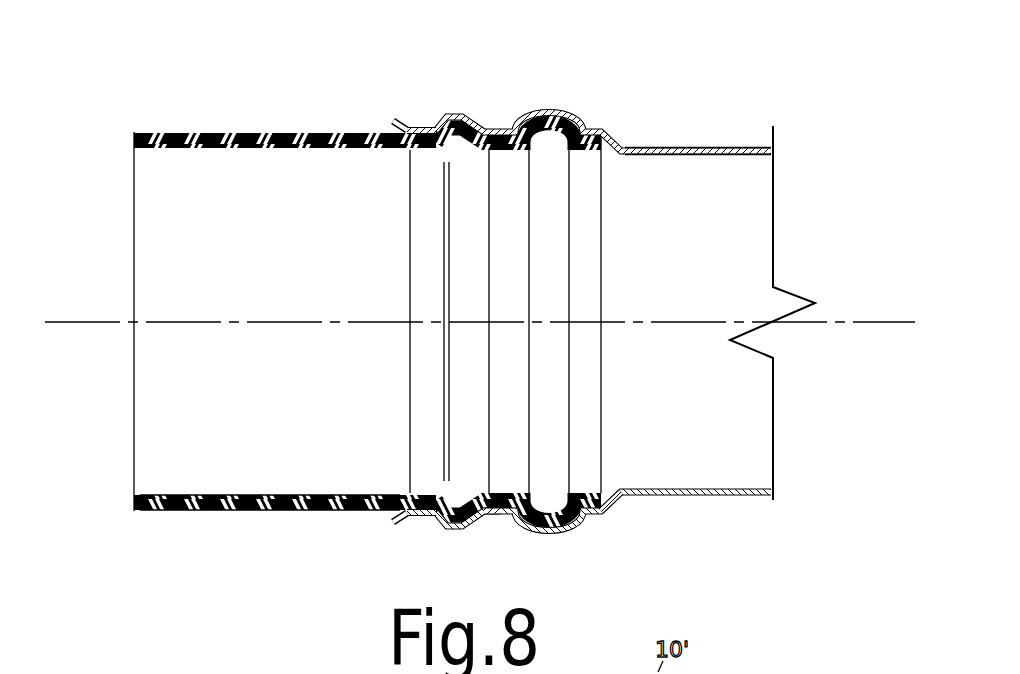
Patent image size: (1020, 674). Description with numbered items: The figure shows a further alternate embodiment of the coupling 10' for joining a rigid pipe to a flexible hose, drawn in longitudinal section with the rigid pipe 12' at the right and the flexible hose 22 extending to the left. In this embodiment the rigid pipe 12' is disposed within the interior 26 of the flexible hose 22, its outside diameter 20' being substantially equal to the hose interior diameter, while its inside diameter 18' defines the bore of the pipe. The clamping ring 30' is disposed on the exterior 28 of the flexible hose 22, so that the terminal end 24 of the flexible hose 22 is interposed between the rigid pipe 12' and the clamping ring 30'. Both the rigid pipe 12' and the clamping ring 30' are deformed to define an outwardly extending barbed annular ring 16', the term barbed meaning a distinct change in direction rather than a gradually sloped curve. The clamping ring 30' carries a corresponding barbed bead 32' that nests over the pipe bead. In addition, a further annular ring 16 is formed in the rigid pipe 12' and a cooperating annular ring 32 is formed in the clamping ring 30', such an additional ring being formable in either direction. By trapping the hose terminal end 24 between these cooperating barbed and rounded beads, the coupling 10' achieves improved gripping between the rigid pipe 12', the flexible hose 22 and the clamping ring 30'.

The coupling 10' is at (285, 254).
The rigid pipe 12' is at (611, 287).
The barbed annular ring 16' is at (480, 283).
The annular ring 16 is at (556, 287).
The clamping ring 30' is at (640, 285).
The outside diameter of rigid pipe 20' is at (737, 104).
The inside diameter of rigid pipe 18' is at (747, 190).
The flexible hose 22 is at (166, 522).
The interior of flexible hose 26 is at (278, 494).
The exterior of flexible hose 28 is at (306, 512).
The barbed annular ring of clamping ring 32' is at (434, 352).
The terminal end of flexible hose 24 is at (500, 514).
The annular ring of clamping ring 32 is at (623, 506).